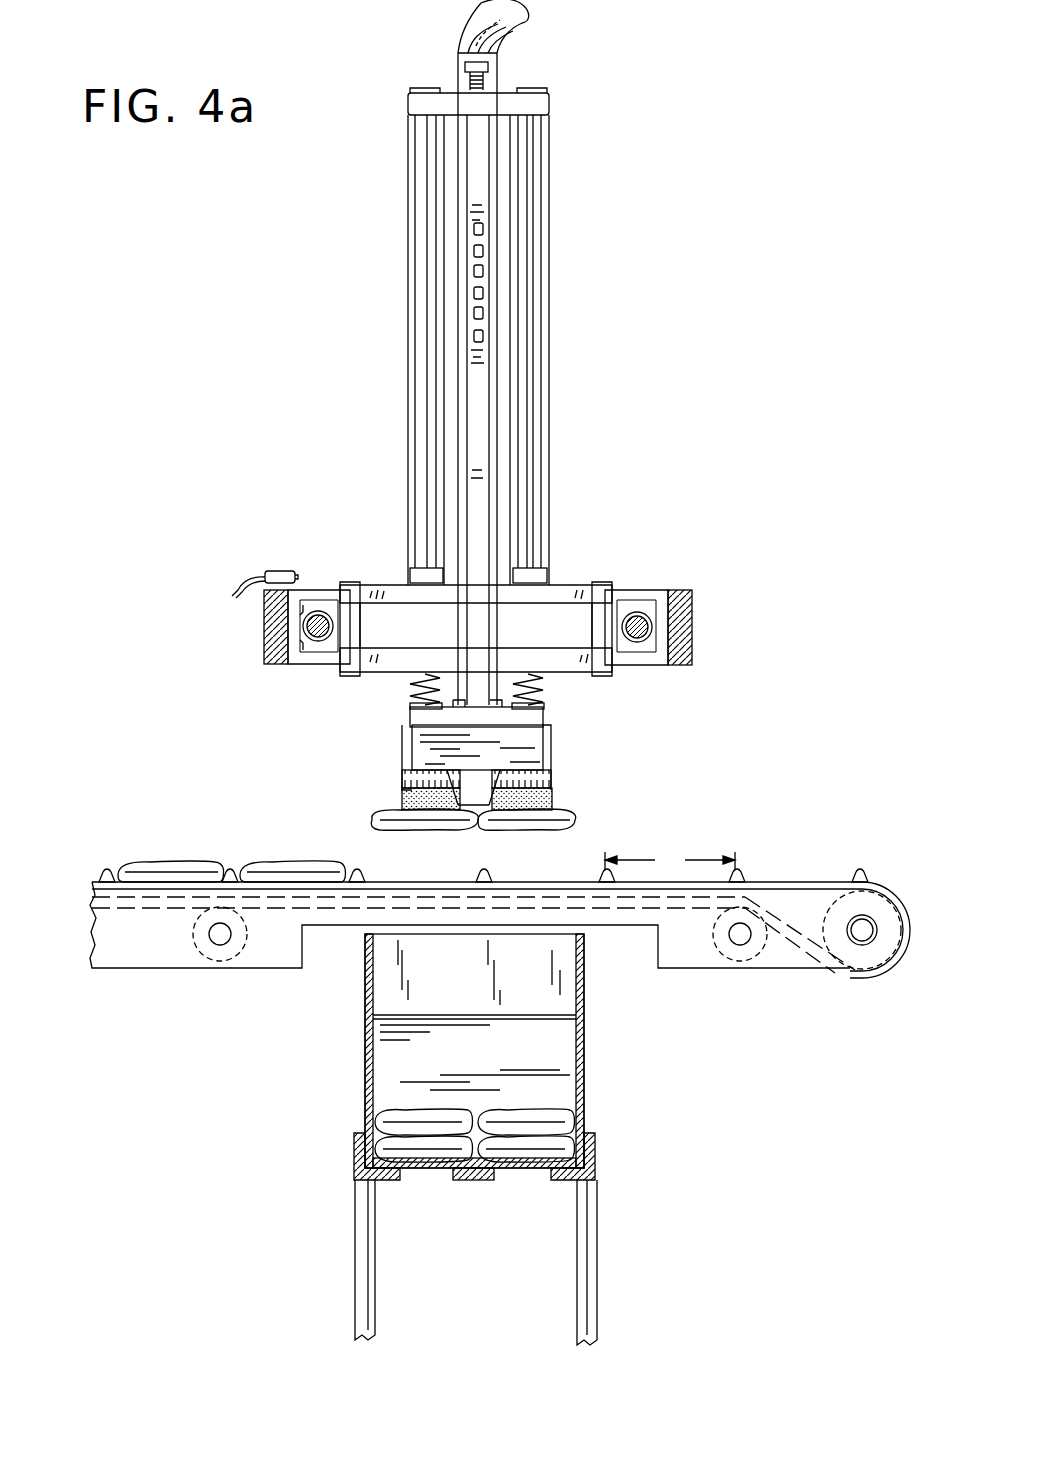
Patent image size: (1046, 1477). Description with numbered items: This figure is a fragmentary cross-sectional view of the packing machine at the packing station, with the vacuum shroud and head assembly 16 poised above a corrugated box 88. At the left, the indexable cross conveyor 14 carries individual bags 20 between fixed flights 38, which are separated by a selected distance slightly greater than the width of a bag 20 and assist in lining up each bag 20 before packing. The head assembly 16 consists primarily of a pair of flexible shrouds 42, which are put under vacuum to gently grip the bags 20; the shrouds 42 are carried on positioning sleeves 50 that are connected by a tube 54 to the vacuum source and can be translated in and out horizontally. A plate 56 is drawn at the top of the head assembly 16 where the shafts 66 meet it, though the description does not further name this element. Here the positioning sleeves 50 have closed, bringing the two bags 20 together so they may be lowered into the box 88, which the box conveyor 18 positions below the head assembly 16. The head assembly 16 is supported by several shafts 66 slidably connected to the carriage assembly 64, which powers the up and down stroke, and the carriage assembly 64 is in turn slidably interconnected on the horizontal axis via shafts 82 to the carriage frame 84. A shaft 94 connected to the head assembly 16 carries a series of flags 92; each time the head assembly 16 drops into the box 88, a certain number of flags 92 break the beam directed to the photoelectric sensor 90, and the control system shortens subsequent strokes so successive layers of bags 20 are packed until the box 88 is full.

The cross conveyor 14 is at (803, 882).
The vacuum shroud and head assembly 16 is at (551, 745).
The box conveyor 18 is at (398, 1185).
The bag 20 is at (378, 823).
The flight 38 is at (105, 876).
The flexible shroud 42 is at (402, 800).
The positioning sleeve 50 is at (404, 778).
The tube 54 is at (462, 62).
The mounting plate 56 is at (410, 712).
The carriage assembly 64 is at (572, 583).
The shaft 66 is at (425, 316).
The shaft 82 is at (318, 626).
The carriage frame 84 is at (680, 590).
The corrugated box 88 is at (586, 1050).
The photoelectric sensor 90 is at (278, 570).
The flag 92 is at (483, 271).
The shaft 94 is at (482, 442).